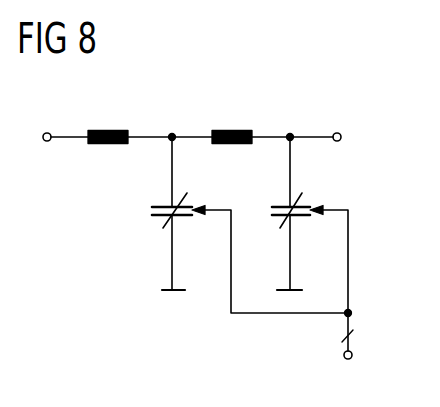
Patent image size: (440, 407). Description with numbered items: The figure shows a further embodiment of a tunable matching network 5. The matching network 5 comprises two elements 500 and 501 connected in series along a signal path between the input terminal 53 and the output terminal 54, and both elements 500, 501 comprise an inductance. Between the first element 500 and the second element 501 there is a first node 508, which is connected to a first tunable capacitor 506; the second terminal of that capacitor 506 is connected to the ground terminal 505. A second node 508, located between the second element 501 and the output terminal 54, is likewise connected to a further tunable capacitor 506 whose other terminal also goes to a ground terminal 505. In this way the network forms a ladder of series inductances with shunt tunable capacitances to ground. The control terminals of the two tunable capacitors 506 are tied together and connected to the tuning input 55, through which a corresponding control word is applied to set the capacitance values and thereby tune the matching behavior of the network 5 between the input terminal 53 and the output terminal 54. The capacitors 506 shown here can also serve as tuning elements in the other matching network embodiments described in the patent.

The tunable matching network 5 is at (335, 112).
The input terminal 53 is at (46, 142).
The output terminal 54 is at (342, 137).
The tuning input 55 is at (352, 355).
The first element 500 is at (105, 130).
The second element 501 is at (229, 130).
The ground terminal 505 is at (163, 292).
The tunable capacitor 506 is at (152, 210).
The node 508 is at (170, 130).